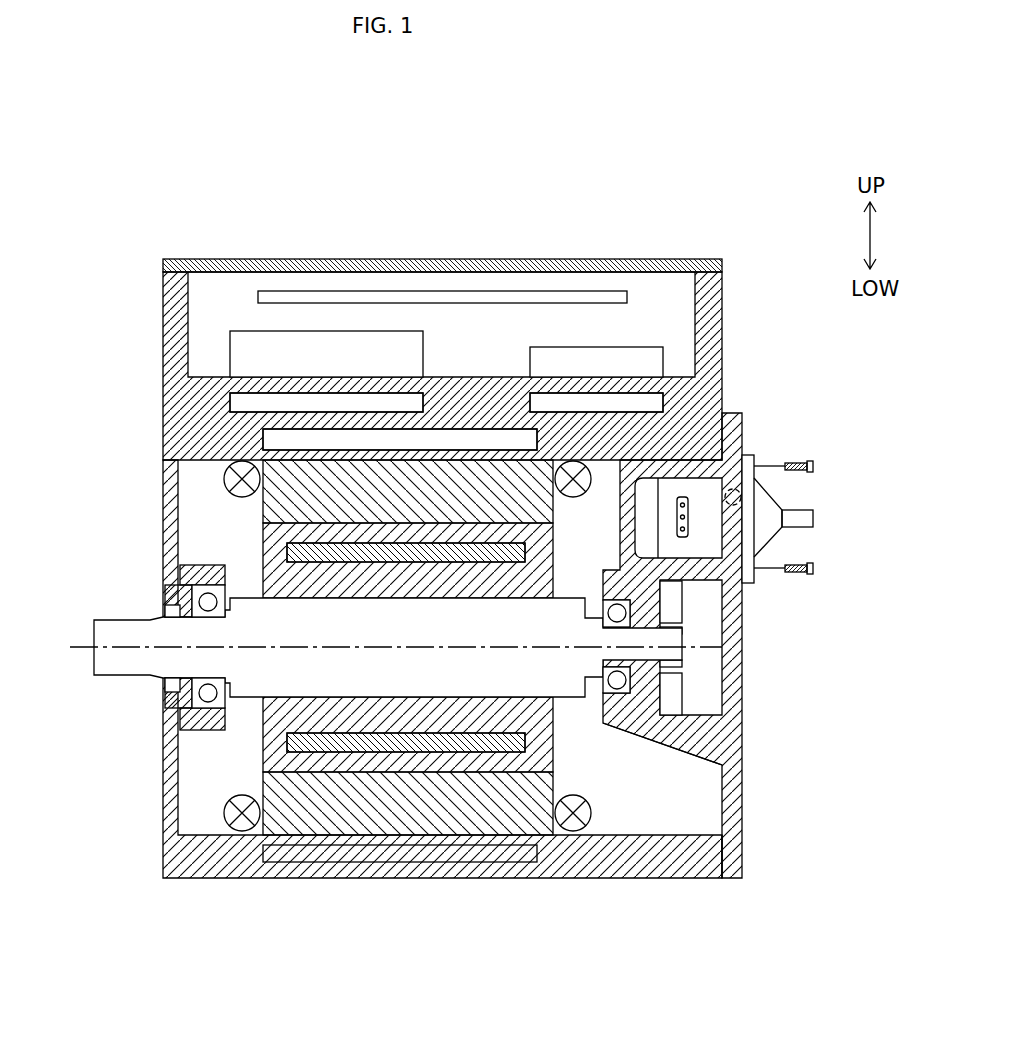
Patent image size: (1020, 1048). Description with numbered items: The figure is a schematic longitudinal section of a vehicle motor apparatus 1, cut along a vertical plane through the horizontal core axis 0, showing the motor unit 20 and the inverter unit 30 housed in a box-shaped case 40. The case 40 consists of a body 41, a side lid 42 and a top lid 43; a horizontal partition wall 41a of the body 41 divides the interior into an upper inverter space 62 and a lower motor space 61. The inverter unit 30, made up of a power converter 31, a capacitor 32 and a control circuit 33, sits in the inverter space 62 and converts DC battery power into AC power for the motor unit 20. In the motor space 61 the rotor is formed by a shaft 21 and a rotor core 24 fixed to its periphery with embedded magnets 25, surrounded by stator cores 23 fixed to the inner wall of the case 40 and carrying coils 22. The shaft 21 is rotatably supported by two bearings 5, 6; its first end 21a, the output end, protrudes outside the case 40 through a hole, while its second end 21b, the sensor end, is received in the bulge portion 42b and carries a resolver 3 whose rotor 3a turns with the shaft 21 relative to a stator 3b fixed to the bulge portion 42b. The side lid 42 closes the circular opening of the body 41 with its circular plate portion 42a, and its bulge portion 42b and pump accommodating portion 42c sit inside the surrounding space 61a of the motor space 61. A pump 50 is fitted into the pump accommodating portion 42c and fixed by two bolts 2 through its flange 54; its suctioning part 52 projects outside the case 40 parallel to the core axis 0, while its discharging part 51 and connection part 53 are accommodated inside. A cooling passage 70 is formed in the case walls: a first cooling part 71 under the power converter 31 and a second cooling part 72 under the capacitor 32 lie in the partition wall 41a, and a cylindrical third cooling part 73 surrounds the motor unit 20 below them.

The motor apparatus 1 is at (650, 200).
The bolt 2 is at (814, 467).
The resolver 3 is at (702, 621).
The rotor 3a is at (688, 667).
The stator 3b is at (685, 692).
The bearing 5 is at (190, 585).
The bearing 6 is at (615, 598).
The core axis 0 is at (386, 648).
The motor unit 20 is at (358, 925).
The shaft 21 is at (572, 706).
The first end 21a is at (118, 672).
The second end 21b is at (672, 655).
The coil 22 is at (571, 832).
The stator core 23 is at (497, 818).
The rotor core 24 is at (450, 762).
The magnet 25 is at (385, 745).
The inverter unit 30 is at (570, 213).
The power converter 31 is at (568, 350).
The capacitor 32 is at (372, 337).
The control circuit 33 is at (456, 297).
The case 40 is at (734, 325).
The body 41 is at (160, 548).
The partition wall 41a is at (475, 403).
The side lid 42 is at (748, 742).
The circular plate portion 42a is at (733, 786).
The bulge portion 42b is at (690, 757).
The pump accommodating portion 42c is at (675, 458).
The top lid 43 is at (213, 254).
The pump 50 is at (779, 576).
The discharging part 51 is at (753, 493).
The suctioning part 52 is at (814, 518).
The connection part 53 is at (688, 528).
The flange 54 is at (753, 448).
The motor space 61 is at (197, 793).
The surrounding space 61a is at (685, 818).
The inverter space 62 is at (203, 302).
The cooling passage 70 is at (448, 600).
The first cooling part 71 is at (653, 403).
The second cooling part 72 is at (240, 405).
The third cooling part 73 is at (272, 440).